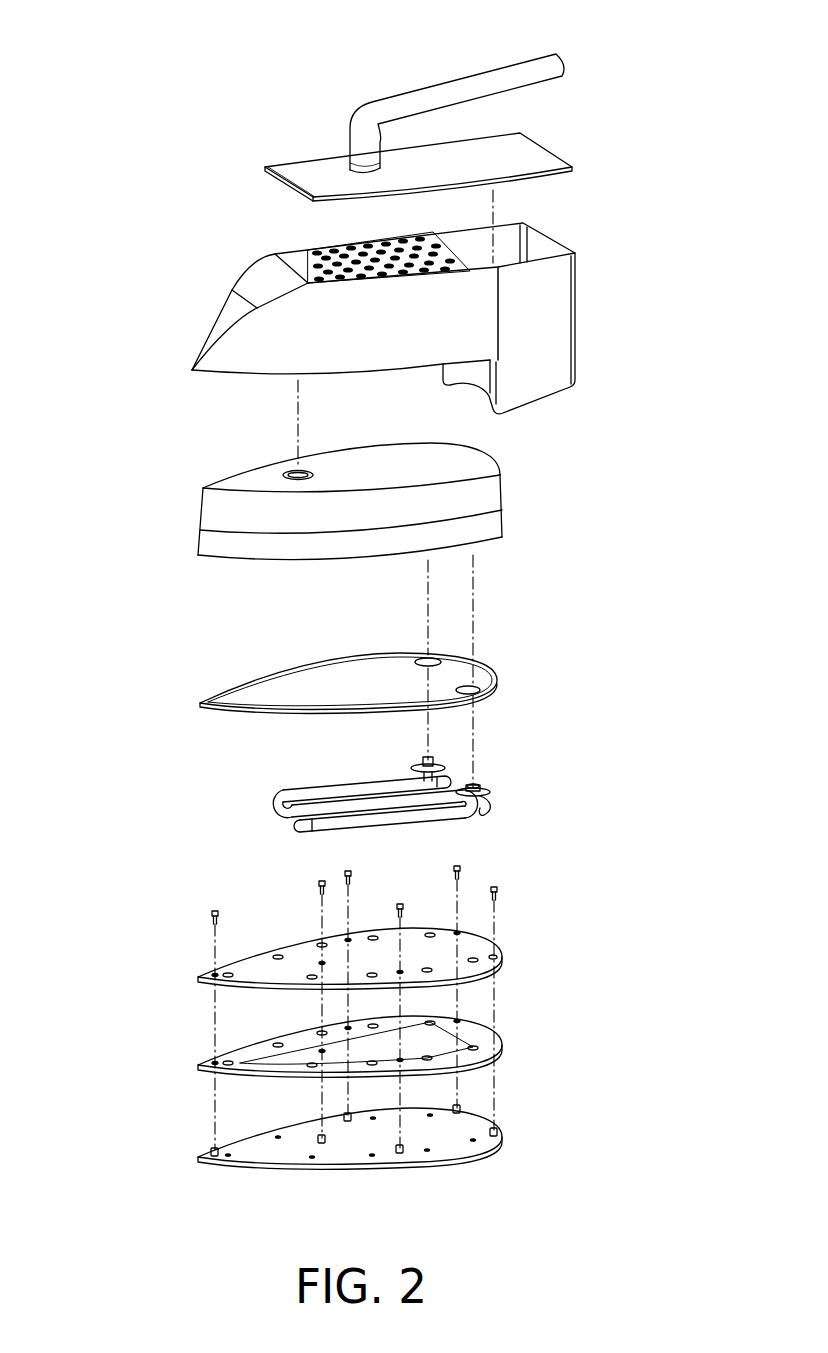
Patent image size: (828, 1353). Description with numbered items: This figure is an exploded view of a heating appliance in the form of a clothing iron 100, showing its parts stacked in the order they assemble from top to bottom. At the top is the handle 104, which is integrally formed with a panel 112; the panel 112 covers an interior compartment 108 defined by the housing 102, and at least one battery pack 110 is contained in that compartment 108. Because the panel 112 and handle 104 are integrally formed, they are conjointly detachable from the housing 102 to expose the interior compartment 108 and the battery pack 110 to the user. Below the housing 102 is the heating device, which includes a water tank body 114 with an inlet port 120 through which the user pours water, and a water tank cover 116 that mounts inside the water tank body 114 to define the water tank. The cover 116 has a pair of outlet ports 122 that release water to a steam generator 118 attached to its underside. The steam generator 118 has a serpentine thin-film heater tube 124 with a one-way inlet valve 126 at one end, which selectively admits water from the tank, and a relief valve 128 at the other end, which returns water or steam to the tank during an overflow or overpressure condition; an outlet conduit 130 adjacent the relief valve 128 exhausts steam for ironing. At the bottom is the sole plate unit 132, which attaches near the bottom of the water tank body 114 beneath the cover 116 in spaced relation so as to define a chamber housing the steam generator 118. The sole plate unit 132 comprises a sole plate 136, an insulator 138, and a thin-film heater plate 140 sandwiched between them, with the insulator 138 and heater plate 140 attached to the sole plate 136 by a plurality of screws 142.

The iron 100 is at (218, 62).
The housing 102 is at (580, 300).
The handle 104 is at (497, 67).
The interior compartment 108 is at (500, 244).
The battery pack 110 is at (318, 265).
The panel 112 is at (528, 153).
The water tank body 114 is at (498, 482).
The water tank cover 116 is at (362, 664).
The steam generator 118 is at (349, 793).
The inlet port 120 is at (290, 470).
The outlet ports 122 is at (478, 678).
The thin-film heater tube 124 is at (302, 828).
The inlet valve 126 is at (422, 757).
The relief valve 128 is at (476, 781).
The outlet conduit 130 is at (488, 807).
The sole plate unit 132 is at (514, 1043).
The sole plate 136 is at (453, 1163).
The insulator 138 is at (493, 939).
The thin-film heater plate 140 is at (257, 1048).
The screws 142 is at (212, 912).